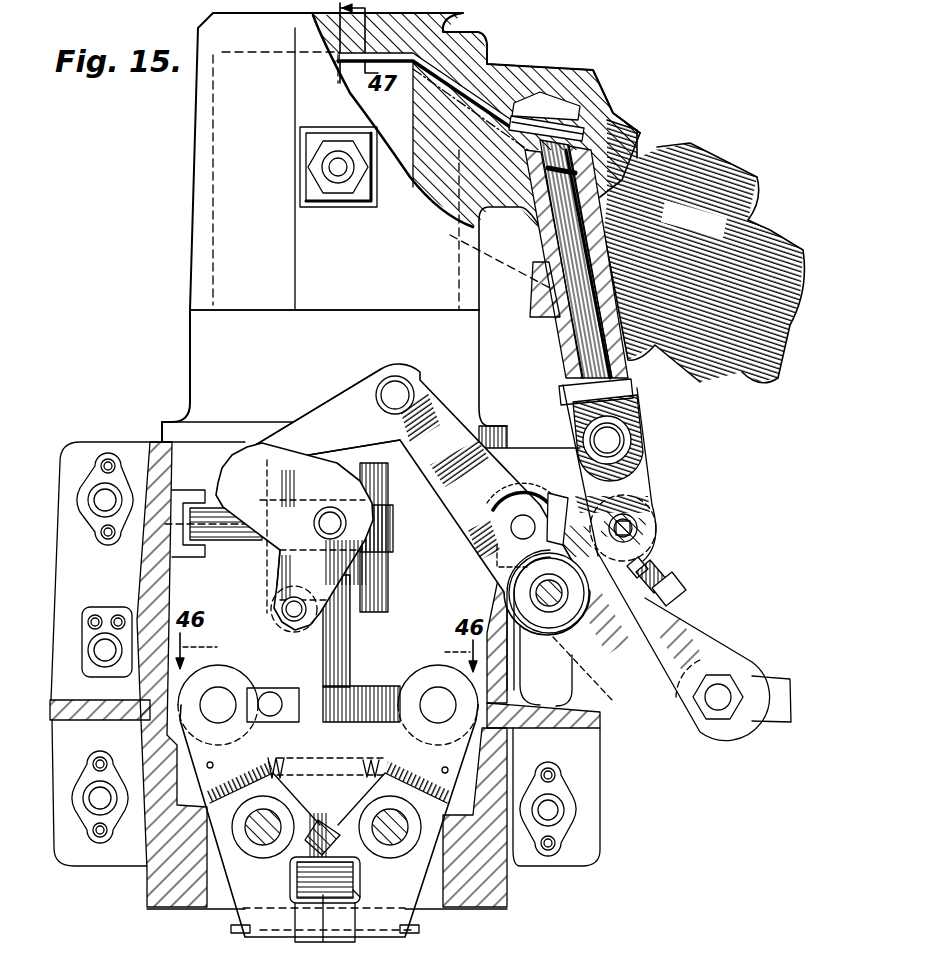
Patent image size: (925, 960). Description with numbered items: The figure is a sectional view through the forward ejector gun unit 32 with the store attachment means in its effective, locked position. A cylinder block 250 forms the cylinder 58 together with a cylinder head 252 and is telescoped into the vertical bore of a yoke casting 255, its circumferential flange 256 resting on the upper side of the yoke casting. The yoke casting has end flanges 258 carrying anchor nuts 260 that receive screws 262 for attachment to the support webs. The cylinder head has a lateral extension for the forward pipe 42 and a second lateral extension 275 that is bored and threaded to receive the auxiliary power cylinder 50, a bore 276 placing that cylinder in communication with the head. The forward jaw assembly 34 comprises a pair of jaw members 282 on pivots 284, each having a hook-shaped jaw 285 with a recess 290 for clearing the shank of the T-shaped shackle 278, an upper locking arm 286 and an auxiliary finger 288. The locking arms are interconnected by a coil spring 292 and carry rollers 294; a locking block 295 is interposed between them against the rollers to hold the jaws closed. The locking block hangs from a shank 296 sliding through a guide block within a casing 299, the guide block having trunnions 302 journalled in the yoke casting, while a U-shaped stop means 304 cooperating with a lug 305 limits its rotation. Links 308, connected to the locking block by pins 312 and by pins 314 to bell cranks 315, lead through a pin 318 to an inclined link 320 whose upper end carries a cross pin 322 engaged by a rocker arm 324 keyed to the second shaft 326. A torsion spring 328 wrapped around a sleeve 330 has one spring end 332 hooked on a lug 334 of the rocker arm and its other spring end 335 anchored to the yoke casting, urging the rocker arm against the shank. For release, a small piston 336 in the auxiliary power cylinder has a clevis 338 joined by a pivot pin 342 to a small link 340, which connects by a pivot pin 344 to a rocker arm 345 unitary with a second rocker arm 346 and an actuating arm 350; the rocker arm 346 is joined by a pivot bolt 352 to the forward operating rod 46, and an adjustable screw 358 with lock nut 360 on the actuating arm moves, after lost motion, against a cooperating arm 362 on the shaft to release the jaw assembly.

The forward ejector gun unit 32 is at (188, 324).
The forward jaw assembly 34 is at (240, 918).
The forward pipe 42 is at (760, 372).
The forward operating rod 46 is at (771, 678).
The auxiliary power cylinder 50 is at (565, 352).
The cylinder 58 is at (345, 339).
The cylinder block 250 is at (192, 355).
The cylinder head 252 is at (443, 28).
The yoke casting 255 is at (147, 445).
The circumferential flange 256 is at (162, 422).
The flange 258 is at (62, 558).
The anchor nut 260 is at (95, 474).
The screw 262 is at (100, 655).
The second lateral extension 275 is at (563, 72).
The bore 276 is at (433, 98).
The T-shaped shackle 278 is at (303, 889).
The jaw member 282 is at (263, 933).
The pivot 284 is at (262, 843).
The hook-shaped jaw 285 is at (325, 918).
The upper locking arm 286 is at (250, 740).
The auxiliary finger 288 is at (340, 828).
The recess 290 is at (360, 894).
The coil spring 292 is at (303, 757).
The roller 294 is at (225, 668).
The locking block 295 is at (377, 688).
The shank 296 is at (315, 410).
The casing 299 is at (388, 578).
The trunnion 302 is at (327, 528).
The U-shaped stop means 304 is at (188, 490).
The lug 305 is at (225, 543).
The link 308 is at (265, 638).
The pin 312 is at (280, 704).
The pin 314 is at (283, 608).
The bell crank 315 is at (283, 575).
The pin 318 is at (240, 473).
The inclined link 320 is at (307, 420).
The cross pin 322 is at (390, 390).
The rocker arm 324 is at (440, 385).
The second shaft 326 is at (540, 593).
The torsion spring 328 is at (544, 636).
The sleeve 330 is at (575, 615).
The spring end 332 is at (505, 505).
The lug 334 is at (490, 548).
The spring end 335 is at (521, 688).
The small piston 336 is at (563, 249).
The clevis 338 is at (623, 416).
The small link 340 is at (647, 474).
The pivot pin 342 is at (617, 442).
The pivot pin 344 is at (648, 498).
The rocker arm 345 is at (648, 525).
The second rocker arm 346 is at (706, 654).
The actuating arm 350 is at (645, 549).
The pivot bolt 352 is at (720, 710).
The adjustable screw 358 is at (670, 592).
The lock nut 360 is at (652, 566).
The cooperating arm 362 is at (553, 493).